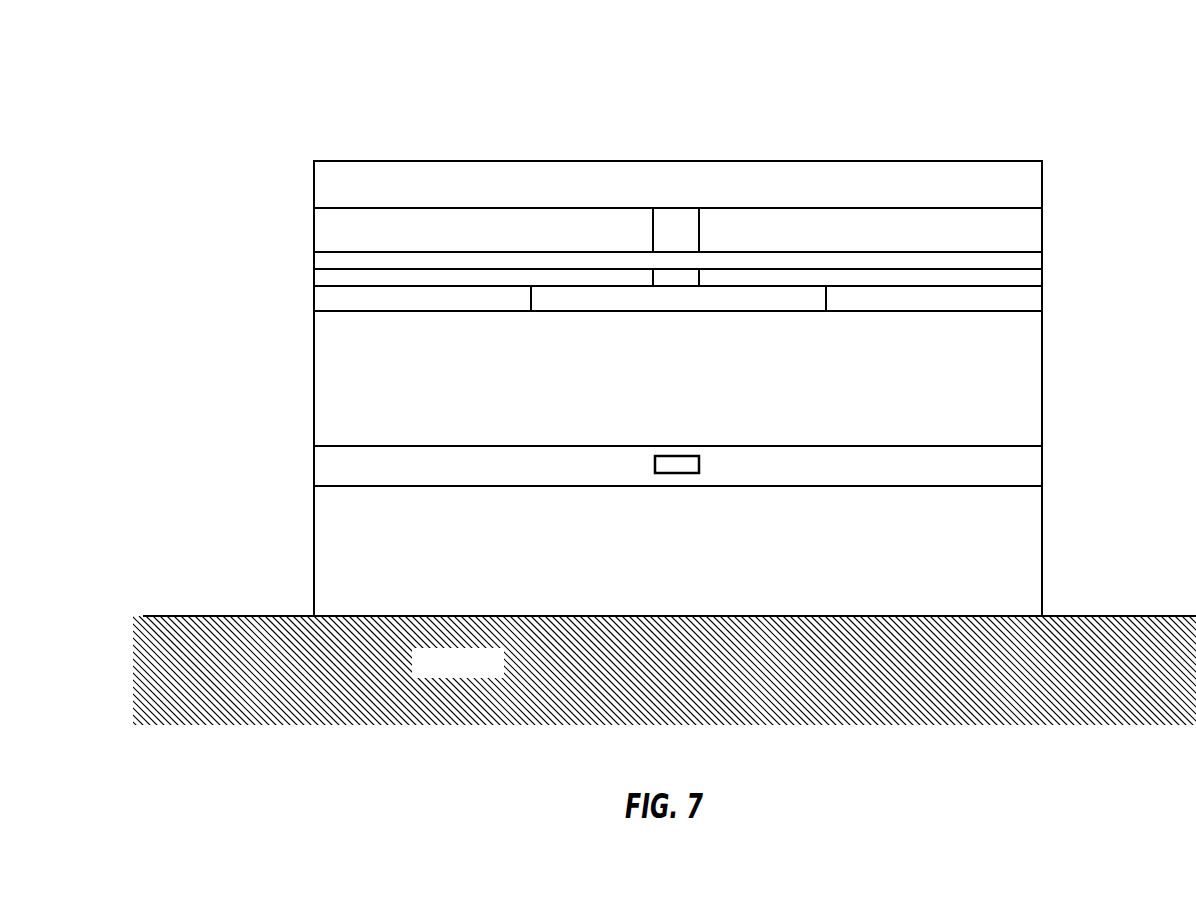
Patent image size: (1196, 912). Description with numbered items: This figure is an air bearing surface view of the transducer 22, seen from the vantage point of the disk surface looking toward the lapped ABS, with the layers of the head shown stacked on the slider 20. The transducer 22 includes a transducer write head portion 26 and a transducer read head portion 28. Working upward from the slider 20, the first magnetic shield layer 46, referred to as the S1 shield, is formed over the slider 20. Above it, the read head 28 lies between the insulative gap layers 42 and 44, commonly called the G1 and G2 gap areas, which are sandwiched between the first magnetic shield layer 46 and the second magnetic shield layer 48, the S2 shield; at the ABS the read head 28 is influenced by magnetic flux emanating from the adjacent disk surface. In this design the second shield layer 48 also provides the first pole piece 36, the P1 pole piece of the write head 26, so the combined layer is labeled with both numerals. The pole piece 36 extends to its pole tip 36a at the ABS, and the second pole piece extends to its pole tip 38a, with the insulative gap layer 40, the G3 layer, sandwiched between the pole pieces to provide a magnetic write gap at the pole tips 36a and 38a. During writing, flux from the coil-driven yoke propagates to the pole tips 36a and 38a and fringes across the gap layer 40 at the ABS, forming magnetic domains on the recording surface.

The slider 20 is at (370, 668).
The transducer 22 is at (1094, 70).
The transducer write head portion 26 is at (738, 241).
The transducer read head portion 28 is at (680, 462).
The first pole piece 36 is at (678, 378).
The pole tip 36a is at (657, 297).
The pole tip 38a is at (676, 222).
The insulative gap layer 40 is at (653, 262).
The insulative gap layer 42 is at (503, 479).
The insulative gap layer 44 is at (915, 479).
The first magnetic shield layer 46 is at (675, 563).
The second magnetic shield layer 48 is at (711, 391).